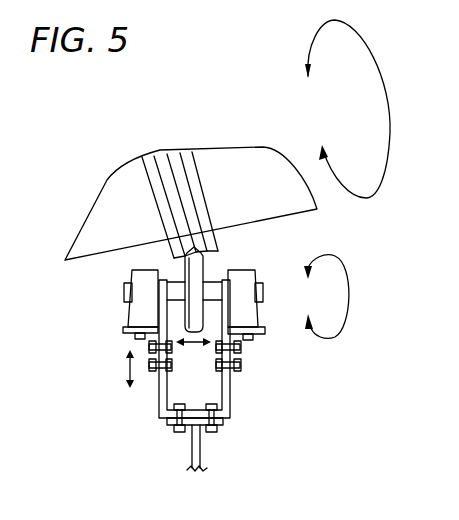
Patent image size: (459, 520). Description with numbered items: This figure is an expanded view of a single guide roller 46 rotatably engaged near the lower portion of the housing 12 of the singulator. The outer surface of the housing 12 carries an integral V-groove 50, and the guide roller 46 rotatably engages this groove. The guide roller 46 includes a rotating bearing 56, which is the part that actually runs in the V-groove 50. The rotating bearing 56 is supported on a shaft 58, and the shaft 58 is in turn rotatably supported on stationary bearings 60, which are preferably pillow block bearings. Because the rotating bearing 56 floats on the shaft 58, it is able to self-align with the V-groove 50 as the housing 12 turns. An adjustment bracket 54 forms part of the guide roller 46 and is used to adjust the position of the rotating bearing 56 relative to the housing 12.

The housing 12 is at (113, 188).
The V-groove 50 is at (185, 137).
The shaft 58 is at (172, 293).
The rotating bearing 56 is at (207, 272).
The adjustment bracket 54 is at (232, 393).
The stationary bearings 60 is at (137, 312).
The guide roller 46 is at (106, 364).